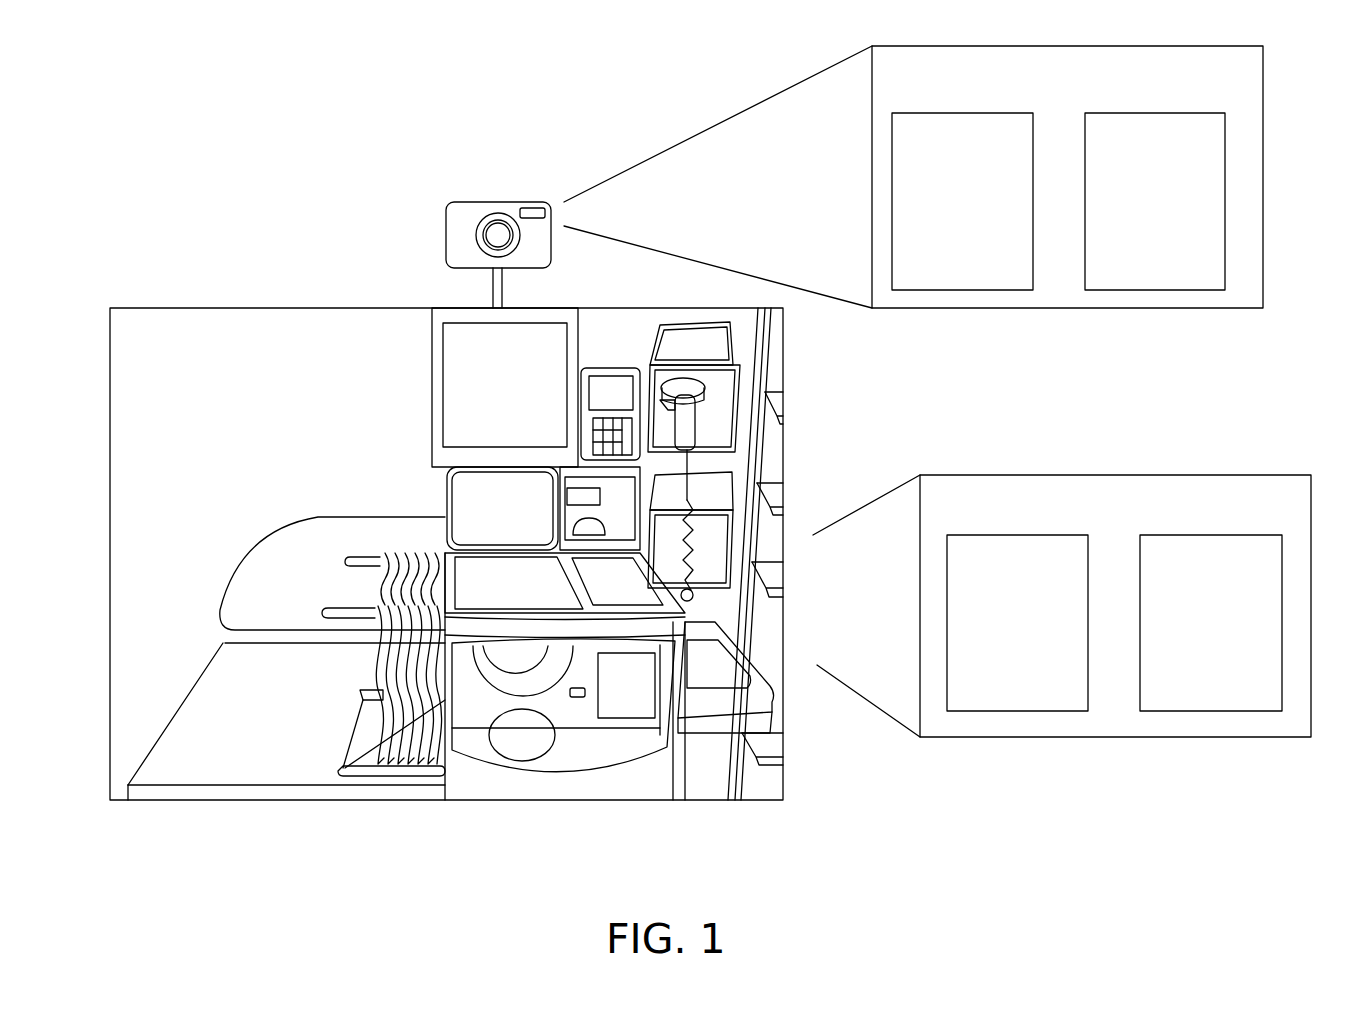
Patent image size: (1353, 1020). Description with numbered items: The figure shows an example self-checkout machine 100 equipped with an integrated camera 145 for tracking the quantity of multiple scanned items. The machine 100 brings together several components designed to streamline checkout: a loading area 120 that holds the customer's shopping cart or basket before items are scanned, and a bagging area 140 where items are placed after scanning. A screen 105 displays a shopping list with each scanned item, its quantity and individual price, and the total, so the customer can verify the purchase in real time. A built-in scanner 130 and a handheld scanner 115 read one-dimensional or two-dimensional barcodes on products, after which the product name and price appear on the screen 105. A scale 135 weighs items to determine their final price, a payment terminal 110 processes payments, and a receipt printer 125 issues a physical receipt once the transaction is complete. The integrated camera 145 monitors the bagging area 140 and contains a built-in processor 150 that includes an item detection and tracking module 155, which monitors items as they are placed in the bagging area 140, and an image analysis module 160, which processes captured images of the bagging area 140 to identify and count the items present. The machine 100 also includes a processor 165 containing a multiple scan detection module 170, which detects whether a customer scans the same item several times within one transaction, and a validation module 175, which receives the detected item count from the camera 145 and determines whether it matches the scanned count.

The self-checkout machine 100 is at (185, 100).
The screen 105 is at (440, 340).
The payment terminal 110 is at (612, 392).
The handheld scanner 115 is at (695, 422).
The loading area 120 is at (720, 702).
The receipt printer 125 is at (623, 702).
The built-in scanner 130 is at (487, 492).
The scale 135 is at (485, 580).
The bagging area 140 is at (292, 792).
The integrated camera 145 is at (480, 201).
The built-in processor 150 is at (1067, 177).
The item detection and tracking module 155 is at (962, 201).
The image analysis module 160 is at (1155, 201).
The processor 165 is at (1115, 606).
The multiple scan detection module 170 is at (1017, 623).
The validation module 175 is at (1211, 623).